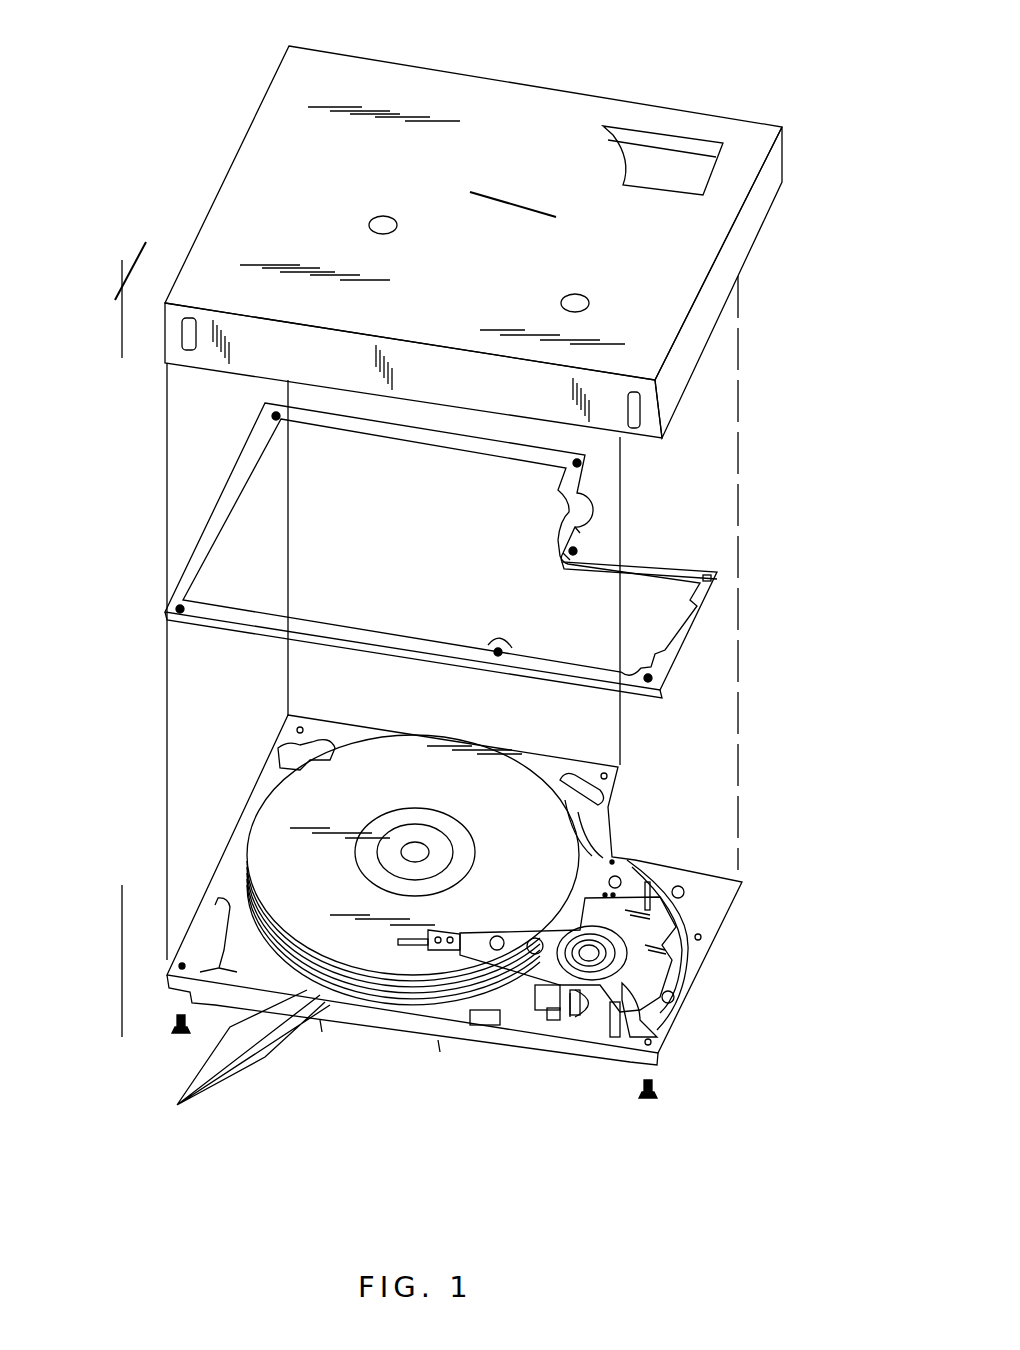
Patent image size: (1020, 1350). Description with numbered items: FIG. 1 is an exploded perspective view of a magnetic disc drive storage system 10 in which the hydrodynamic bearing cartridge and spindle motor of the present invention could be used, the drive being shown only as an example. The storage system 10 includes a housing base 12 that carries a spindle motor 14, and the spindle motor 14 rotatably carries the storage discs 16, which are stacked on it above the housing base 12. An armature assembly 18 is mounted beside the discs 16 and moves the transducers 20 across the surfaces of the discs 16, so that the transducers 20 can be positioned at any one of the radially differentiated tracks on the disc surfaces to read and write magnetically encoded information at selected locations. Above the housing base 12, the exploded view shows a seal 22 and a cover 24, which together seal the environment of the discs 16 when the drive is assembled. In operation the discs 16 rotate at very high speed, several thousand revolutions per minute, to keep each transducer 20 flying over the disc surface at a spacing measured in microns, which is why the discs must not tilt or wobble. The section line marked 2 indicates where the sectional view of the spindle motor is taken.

The section line 2- 2 is at (514, 190).
The storage system 10 is at (538, 242).
The housing base 12 is at (712, 985).
The spindle motor 14 is at (370, 850).
The storage discs 16 is at (335, 1003).
The armature assembly 18 is at (490, 1010).
The transducers 20 is at (396, 960).
The seal 22 is at (702, 648).
The cover 24 is at (742, 312).